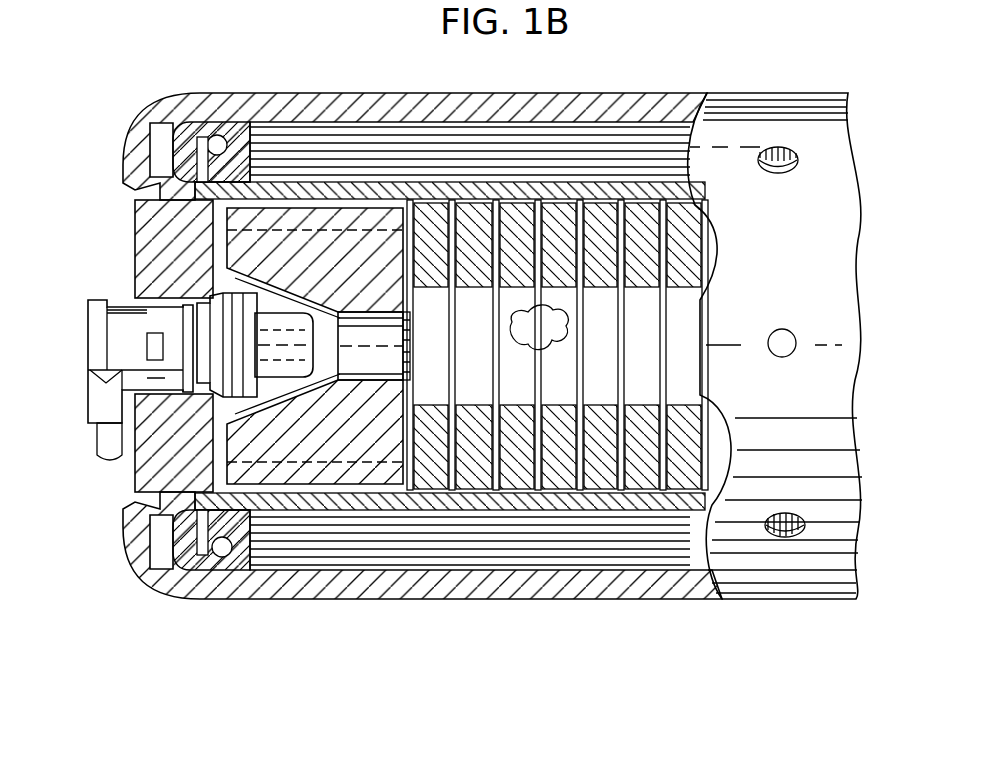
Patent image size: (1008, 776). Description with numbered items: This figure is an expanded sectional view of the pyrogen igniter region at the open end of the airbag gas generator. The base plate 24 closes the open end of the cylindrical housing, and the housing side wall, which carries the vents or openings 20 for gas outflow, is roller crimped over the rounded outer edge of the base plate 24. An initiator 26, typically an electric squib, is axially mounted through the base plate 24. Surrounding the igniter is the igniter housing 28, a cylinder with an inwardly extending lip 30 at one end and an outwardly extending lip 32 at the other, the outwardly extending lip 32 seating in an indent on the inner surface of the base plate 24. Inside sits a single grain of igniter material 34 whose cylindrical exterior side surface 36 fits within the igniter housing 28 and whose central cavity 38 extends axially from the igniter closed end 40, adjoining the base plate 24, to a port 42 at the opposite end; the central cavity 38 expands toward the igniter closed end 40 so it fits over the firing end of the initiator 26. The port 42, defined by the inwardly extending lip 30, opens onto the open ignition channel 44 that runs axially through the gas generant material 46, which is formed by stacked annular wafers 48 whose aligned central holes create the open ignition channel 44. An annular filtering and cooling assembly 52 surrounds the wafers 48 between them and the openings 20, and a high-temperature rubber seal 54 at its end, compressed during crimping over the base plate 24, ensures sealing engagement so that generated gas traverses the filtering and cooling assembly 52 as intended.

The openings 20 is at (800, 158).
The base plate 24 is at (133, 240).
The initiator 26 is at (203, 388).
The igniter housing 28 is at (298, 200).
The inwardly extending lip 30 is at (398, 433).
The outwardly extending lip 32 is at (183, 110).
The single grain of igniter material 34 is at (333, 497).
The cylindrical exterior side surface 36 is at (298, 495).
The central cavity 38 is at (330, 366).
The igniter closed end 40 is at (140, 464).
The port 42 is at (407, 367).
The open ignition channel 44 is at (680, 312).
The gas generant material 46 is at (698, 222).
The wafers 48 is at (547, 253).
The filtering and cooling assembly 52 is at (663, 547).
The rubber seal 54 is at (230, 140).